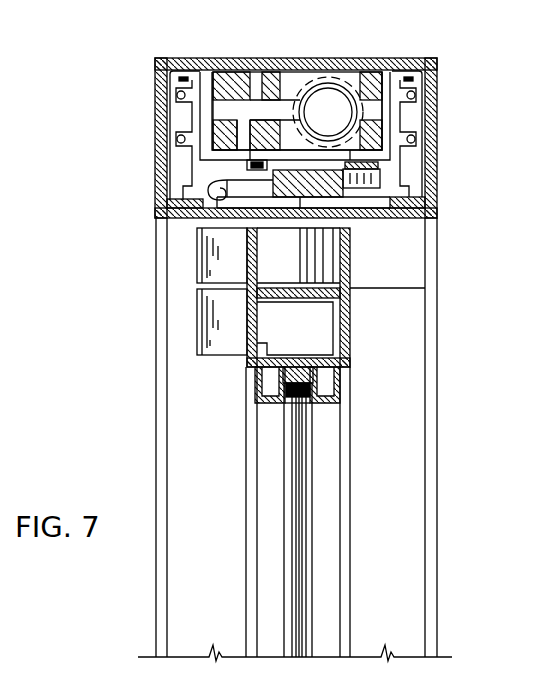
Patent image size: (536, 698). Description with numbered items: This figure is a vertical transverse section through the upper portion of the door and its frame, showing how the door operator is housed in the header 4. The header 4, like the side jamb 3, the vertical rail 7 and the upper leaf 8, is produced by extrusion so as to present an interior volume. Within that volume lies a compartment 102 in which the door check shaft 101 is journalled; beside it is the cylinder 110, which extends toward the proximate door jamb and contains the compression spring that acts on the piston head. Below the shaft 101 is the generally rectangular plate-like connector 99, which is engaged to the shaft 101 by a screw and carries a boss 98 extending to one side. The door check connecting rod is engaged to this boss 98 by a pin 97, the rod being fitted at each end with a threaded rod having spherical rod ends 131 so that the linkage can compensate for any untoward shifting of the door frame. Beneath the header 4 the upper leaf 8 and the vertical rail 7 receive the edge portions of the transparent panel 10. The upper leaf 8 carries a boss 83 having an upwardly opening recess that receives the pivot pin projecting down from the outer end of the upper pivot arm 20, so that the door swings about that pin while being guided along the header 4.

The header 4 is at (162, 122).
The compartment 102 is at (277, 80).
The cylinder 110 is at (337, 73).
The door check shaft 101 is at (265, 163).
The pin 97 is at (350, 161).
The spherical rod end 131 is at (380, 175).
The boss 98 is at (400, 197).
The connector 99 is at (357, 213).
The upper pivot arm 20 is at (200, 246).
The boss 83 is at (200, 300).
The upper leaf 8 is at (250, 345).
The side jamb 3 is at (160, 368).
The transparent panel 10 is at (296, 452).
The vertical rail 7 is at (242, 482).